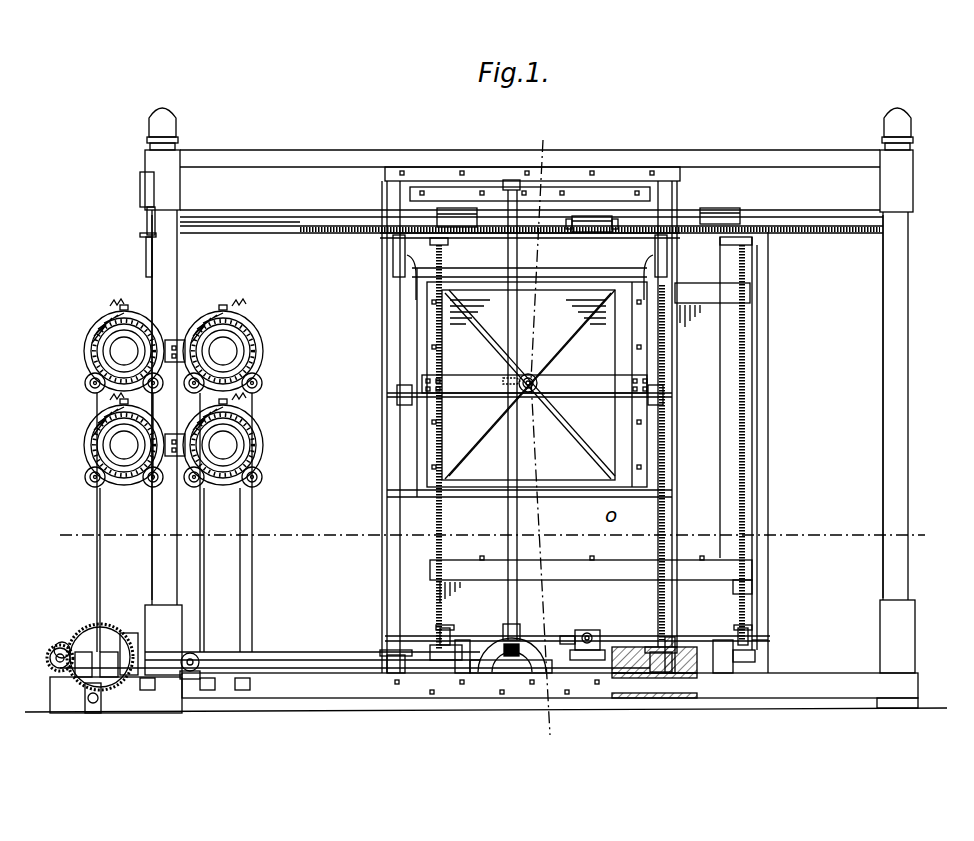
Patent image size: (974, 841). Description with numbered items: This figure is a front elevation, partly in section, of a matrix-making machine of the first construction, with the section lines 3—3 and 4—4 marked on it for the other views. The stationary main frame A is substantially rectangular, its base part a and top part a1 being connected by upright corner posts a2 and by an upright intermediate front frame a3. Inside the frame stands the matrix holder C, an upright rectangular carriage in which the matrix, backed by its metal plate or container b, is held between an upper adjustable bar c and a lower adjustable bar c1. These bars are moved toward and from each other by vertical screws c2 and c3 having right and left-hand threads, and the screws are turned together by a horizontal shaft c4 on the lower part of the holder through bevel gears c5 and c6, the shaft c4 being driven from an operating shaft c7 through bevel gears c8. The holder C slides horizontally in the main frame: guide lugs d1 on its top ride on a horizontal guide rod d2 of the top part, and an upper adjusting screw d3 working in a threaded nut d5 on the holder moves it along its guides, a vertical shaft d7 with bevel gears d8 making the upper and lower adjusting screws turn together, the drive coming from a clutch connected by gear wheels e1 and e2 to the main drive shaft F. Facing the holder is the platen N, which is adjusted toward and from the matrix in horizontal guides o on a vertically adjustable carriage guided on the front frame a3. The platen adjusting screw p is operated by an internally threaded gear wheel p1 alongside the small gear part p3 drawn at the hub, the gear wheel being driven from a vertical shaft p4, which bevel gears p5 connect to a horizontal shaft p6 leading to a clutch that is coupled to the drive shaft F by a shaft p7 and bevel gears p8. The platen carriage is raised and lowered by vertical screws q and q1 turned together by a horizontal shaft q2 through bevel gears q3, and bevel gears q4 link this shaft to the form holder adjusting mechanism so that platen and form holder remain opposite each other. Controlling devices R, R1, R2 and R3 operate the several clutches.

The section line 3— 3 is at (546, 437).
The section line 4— 4 is at (490, 538).
The stationary main frame A is at (908, 462).
The base part of main frame a is at (822, 700).
The top part of main frame a1 is at (770, 165).
The upright corner posts a2 is at (177, 276).
The upright intermediate front frame a3 is at (668, 188).
The guide lugs d1 is at (460, 218).
The horizontal guide rod d2 is at (326, 228).
The upper horizontal adjusting screw d3 is at (531, 242).
The threaded nut d5 is at (590, 232).
The vertical shaft d7 is at (146, 262).
The bevel gears d8 is at (140, 236).
The controlling device R is at (263, 351).
The controlling device R1 is at (84, 351).
The controlling device R2 is at (263, 445).
The controlling device R3 is at (84, 445).
The platen N is at (532, 382).
The adjusting screw for platen p is at (528, 395).
The internally threaded gear wheel p1 is at (536, 380).
The small gear p3 is at (512, 377).
The vertical shaft p4 is at (510, 456).
The bevel gears p5 is at (512, 673).
The horizontal shaft p6 is at (290, 652).
The shaft p7 is at (128, 633).
The bevel gears p8 is at (85, 690).
The horizontal guides o is at (440, 398).
The upper adjustable bar c is at (712, 300).
The lower adjustable bar c1 is at (538, 575).
The vertical screw c2 is at (442, 600).
The vertical screw c3 is at (733, 590).
The horizontal shaft c4 is at (635, 645).
The bevel gears c5 is at (445, 630).
The bevel gears c6 is at (440, 634).
The operating shaft c7 is at (595, 632).
The bevel gears c8 is at (575, 640).
The matrix holder C is at (768, 408).
The vertical screw q is at (387, 551).
The vertical screw q1 is at (746, 472).
The horizontal shaft q2 is at (318, 667).
The bevel gears q3 is at (405, 673).
The bevel gears q4 is at (187, 672).
The metal plate or container b is at (729, 568).
The gear wheel e1 is at (88, 642).
The gear wheel e2 is at (62, 642).
The main drive shaft F is at (47, 660).